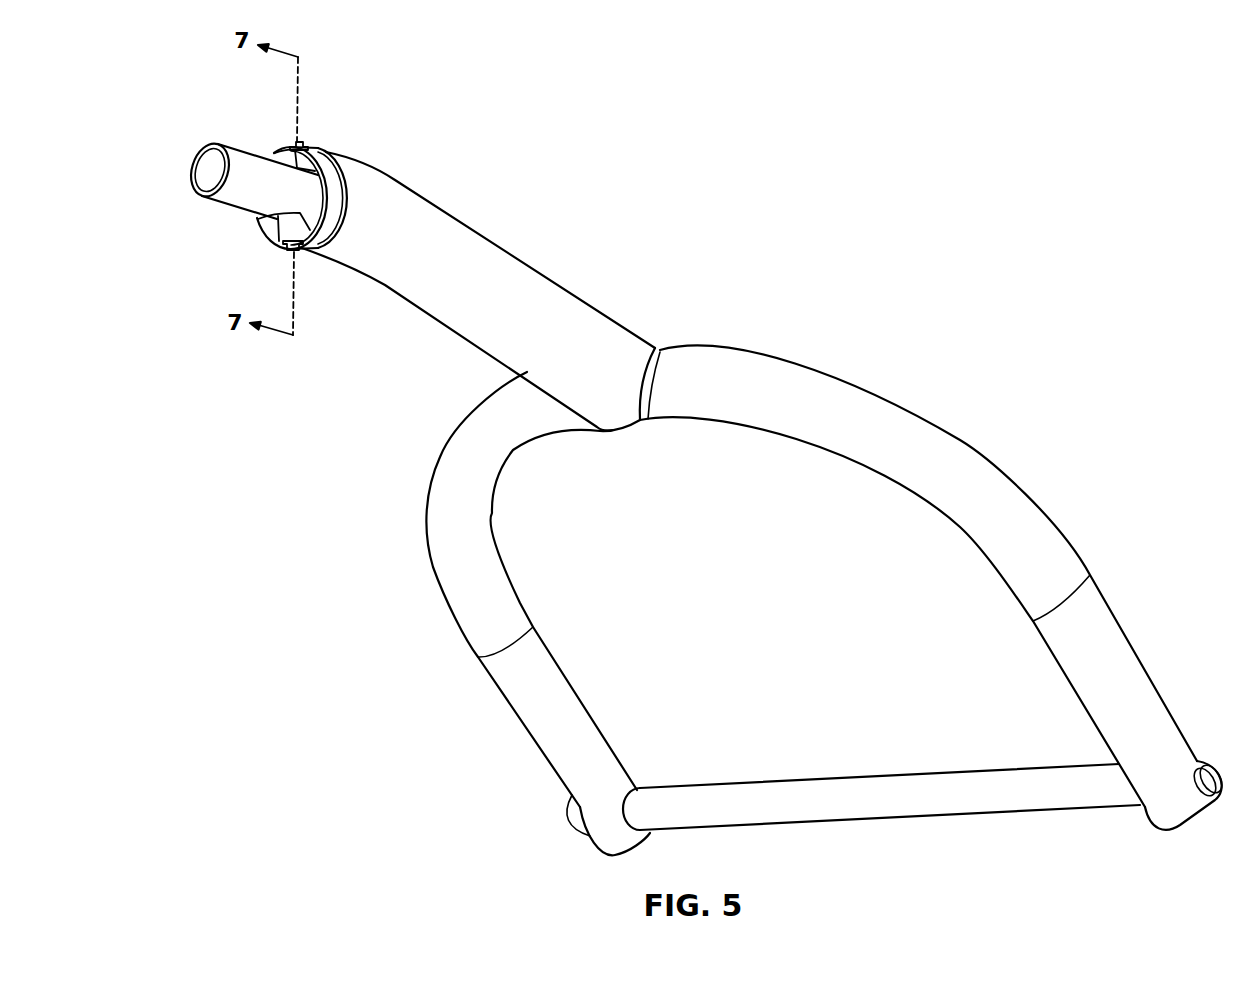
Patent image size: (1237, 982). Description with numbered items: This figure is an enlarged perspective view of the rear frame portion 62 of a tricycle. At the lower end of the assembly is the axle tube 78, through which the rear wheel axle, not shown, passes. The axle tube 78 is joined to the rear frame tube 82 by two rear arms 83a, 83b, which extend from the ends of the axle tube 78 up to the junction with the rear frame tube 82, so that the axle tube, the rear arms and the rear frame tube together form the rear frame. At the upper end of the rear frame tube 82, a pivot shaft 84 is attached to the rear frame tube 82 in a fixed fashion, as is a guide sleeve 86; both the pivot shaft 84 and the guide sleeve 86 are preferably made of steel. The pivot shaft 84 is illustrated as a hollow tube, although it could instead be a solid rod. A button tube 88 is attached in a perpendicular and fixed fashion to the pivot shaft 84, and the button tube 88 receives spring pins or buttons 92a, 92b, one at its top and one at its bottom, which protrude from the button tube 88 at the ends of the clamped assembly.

The rear frame portion 62 is at (807, 307).
The axle tube 78 is at (928, 817).
The rear frame tube 82 is at (495, 240).
The rear arm 83a is at (986, 455).
The rear arm 83b is at (563, 670).
The pivot shaft 84 is at (221, 207).
The guide sleeve 86 is at (258, 220).
The button tube 88 is at (272, 240).
The spring pin 92a is at (304, 140).
The spring pin 92b is at (291, 255).